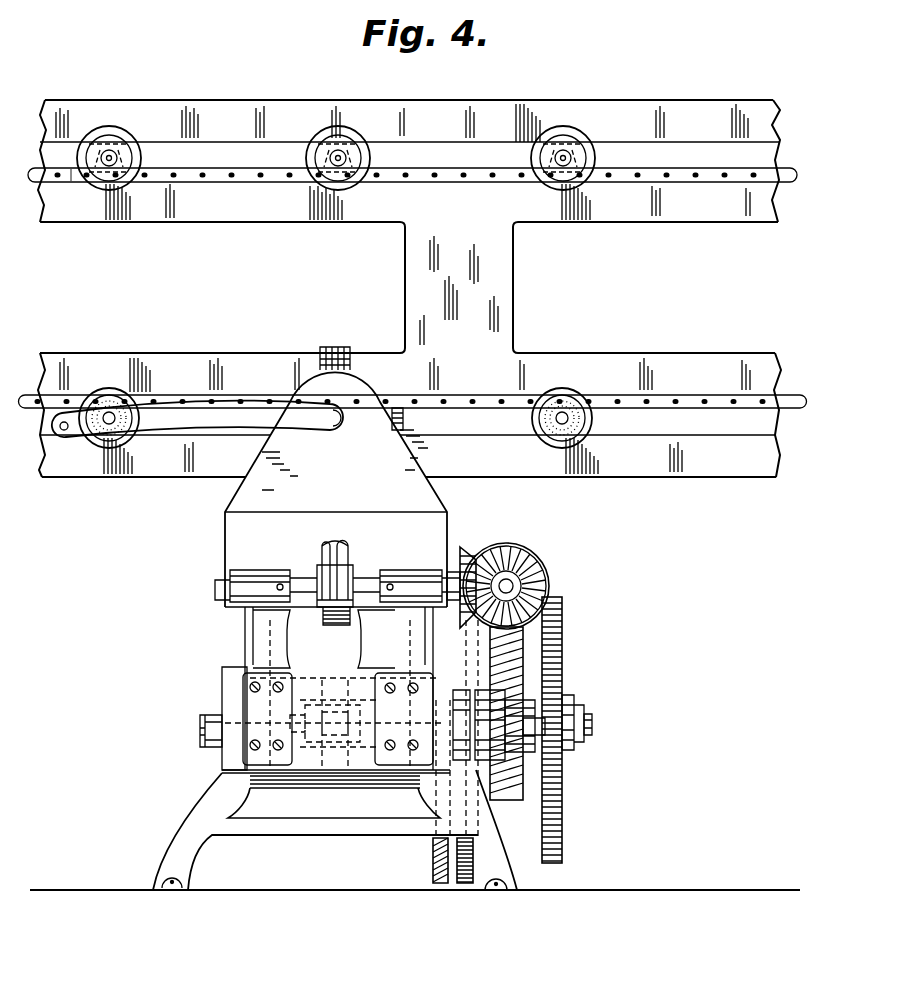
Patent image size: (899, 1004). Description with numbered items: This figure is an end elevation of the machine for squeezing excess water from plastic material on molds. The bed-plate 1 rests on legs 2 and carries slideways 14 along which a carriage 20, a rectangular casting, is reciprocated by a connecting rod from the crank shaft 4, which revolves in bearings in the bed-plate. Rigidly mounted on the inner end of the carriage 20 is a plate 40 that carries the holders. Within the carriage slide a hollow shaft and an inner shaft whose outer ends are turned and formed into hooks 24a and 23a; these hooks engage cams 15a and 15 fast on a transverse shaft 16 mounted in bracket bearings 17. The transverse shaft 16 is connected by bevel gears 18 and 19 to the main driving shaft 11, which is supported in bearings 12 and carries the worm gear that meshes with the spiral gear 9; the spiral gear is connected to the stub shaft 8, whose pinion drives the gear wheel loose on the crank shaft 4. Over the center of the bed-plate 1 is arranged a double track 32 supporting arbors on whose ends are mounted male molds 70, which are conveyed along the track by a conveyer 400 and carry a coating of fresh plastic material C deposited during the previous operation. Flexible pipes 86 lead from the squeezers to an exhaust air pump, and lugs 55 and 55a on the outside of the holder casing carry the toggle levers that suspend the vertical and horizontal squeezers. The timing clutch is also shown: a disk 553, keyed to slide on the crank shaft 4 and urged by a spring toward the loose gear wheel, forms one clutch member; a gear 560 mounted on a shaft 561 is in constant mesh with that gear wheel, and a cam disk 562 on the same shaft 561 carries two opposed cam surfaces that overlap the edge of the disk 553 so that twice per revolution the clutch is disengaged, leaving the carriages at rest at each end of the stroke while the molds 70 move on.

The bed-plate 1 is at (228, 700).
The legs 2 is at (165, 851).
The crank shaft 4 is at (200, 735).
The stub shaft 8 is at (584, 711).
The spiral gear 9 is at (516, 668).
The main driving shaft 11 is at (508, 586).
The bearings 12 is at (481, 647).
The slideways 14 is at (257, 643).
The cam 15 is at (348, 610).
The cam 15a is at (320, 607).
The transverse shaft 16 is at (226, 588).
The bracket bearings 17 is at (236, 633).
The bevel gear 18 is at (473, 548).
The bevel gear 19 is at (523, 547).
The carriage 20 is at (366, 531).
The hooked end of inner shaft 23a is at (349, 560).
The hooked end of hollow shaft 24a is at (327, 553).
The double track 32 is at (510, 270).
The plate 40 is at (336, 489).
The lugs 55 is at (345, 350).
The lugs 55a is at (404, 430).
The male mold 70 is at (109, 154).
The flexible pipes 86 is at (168, 402).
The conveyer 400 is at (684, 178).
The disk 553 is at (433, 855).
The gear 560 is at (553, 785).
The shaft 561 is at (590, 728).
The cam disk 562 is at (480, 800).
The fresh plastic material C is at (122, 443).